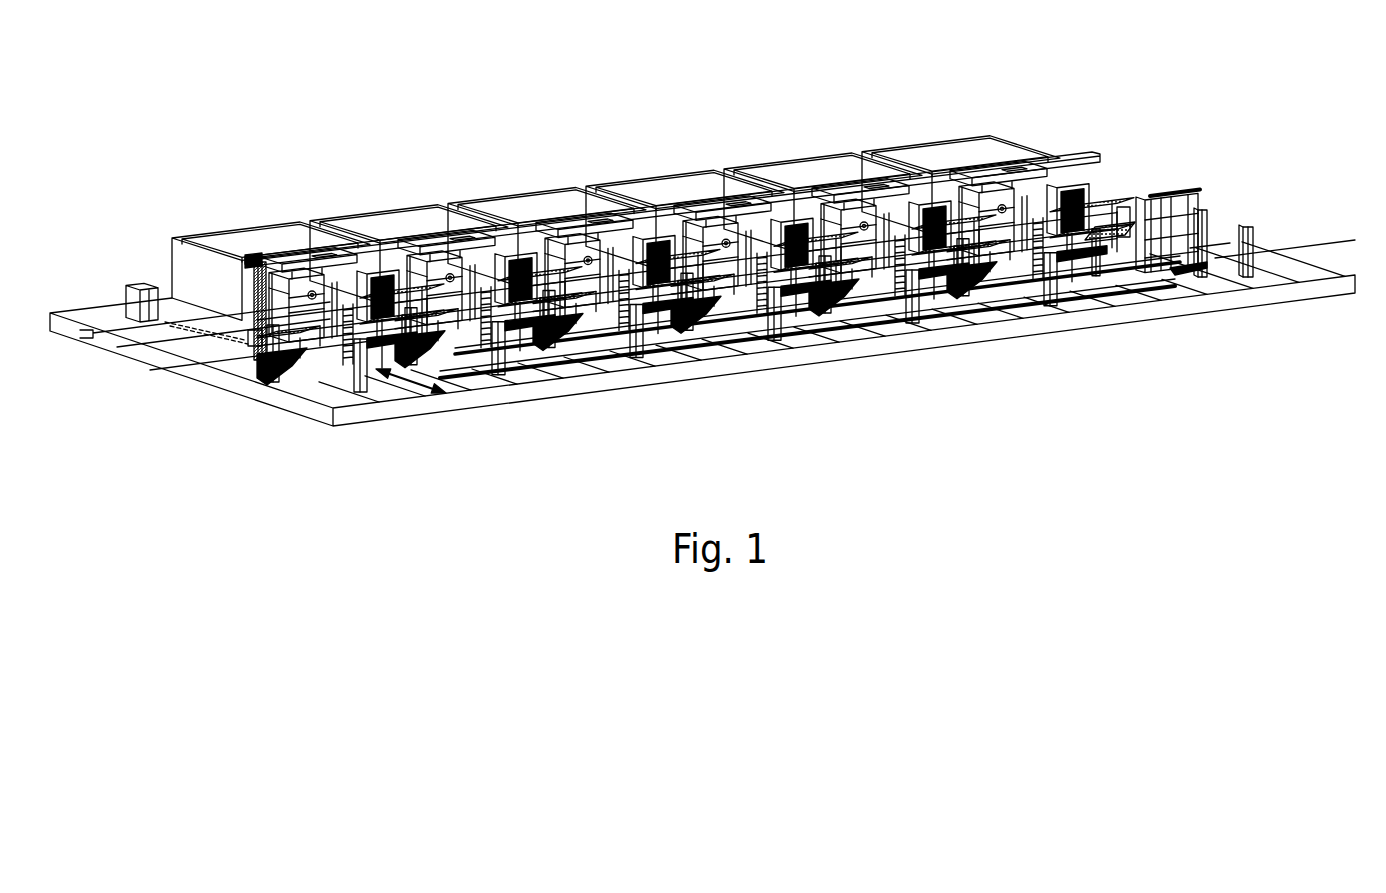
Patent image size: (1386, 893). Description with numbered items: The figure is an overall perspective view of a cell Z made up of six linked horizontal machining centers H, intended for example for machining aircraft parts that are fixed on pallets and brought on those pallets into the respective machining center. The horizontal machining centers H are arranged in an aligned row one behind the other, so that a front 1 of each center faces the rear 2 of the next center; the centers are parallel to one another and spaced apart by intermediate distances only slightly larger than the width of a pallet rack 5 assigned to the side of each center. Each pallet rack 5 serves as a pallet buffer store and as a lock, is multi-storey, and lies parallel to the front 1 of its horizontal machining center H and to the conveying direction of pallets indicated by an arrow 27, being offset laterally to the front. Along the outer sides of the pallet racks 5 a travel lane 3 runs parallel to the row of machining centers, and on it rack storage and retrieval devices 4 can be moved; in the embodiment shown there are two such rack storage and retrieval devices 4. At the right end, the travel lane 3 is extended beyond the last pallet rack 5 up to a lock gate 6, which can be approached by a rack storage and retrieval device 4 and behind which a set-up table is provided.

The front 1 is at (255, 238).
The rear 2 is at (316, 225).
The travel lane 3 is at (655, 339).
The rack storage and retrieval device 4 is at (1218, 261).
The pallet rack 5 is at (1132, 278).
The lock gate 6 is at (1190, 218).
The arrow 27 is at (413, 384).
The horizontal machining center H is at (232, 229).
The cell Z is at (697, 110).